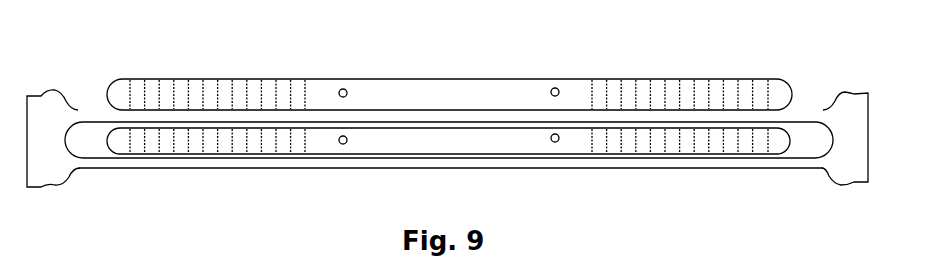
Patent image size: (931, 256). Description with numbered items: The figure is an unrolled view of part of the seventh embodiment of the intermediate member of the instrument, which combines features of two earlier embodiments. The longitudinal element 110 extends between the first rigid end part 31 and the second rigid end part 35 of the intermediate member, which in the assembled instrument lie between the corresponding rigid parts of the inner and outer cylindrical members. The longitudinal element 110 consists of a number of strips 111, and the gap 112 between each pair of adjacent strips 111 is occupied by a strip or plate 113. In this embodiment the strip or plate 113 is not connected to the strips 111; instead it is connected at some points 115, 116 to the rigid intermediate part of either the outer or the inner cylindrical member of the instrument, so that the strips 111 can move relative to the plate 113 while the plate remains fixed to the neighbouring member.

The longitudinal element 110 is at (437, 76).
The strip or plate 113 is at (318, 88).
The gap 112 is at (93, 145).
The strip 111 is at (238, 163).
The connection point 115 is at (343, 144).
The connection point 116 is at (558, 142).
The first rigid end part 31 is at (44, 104).
The second rigid end part 35 is at (847, 102).